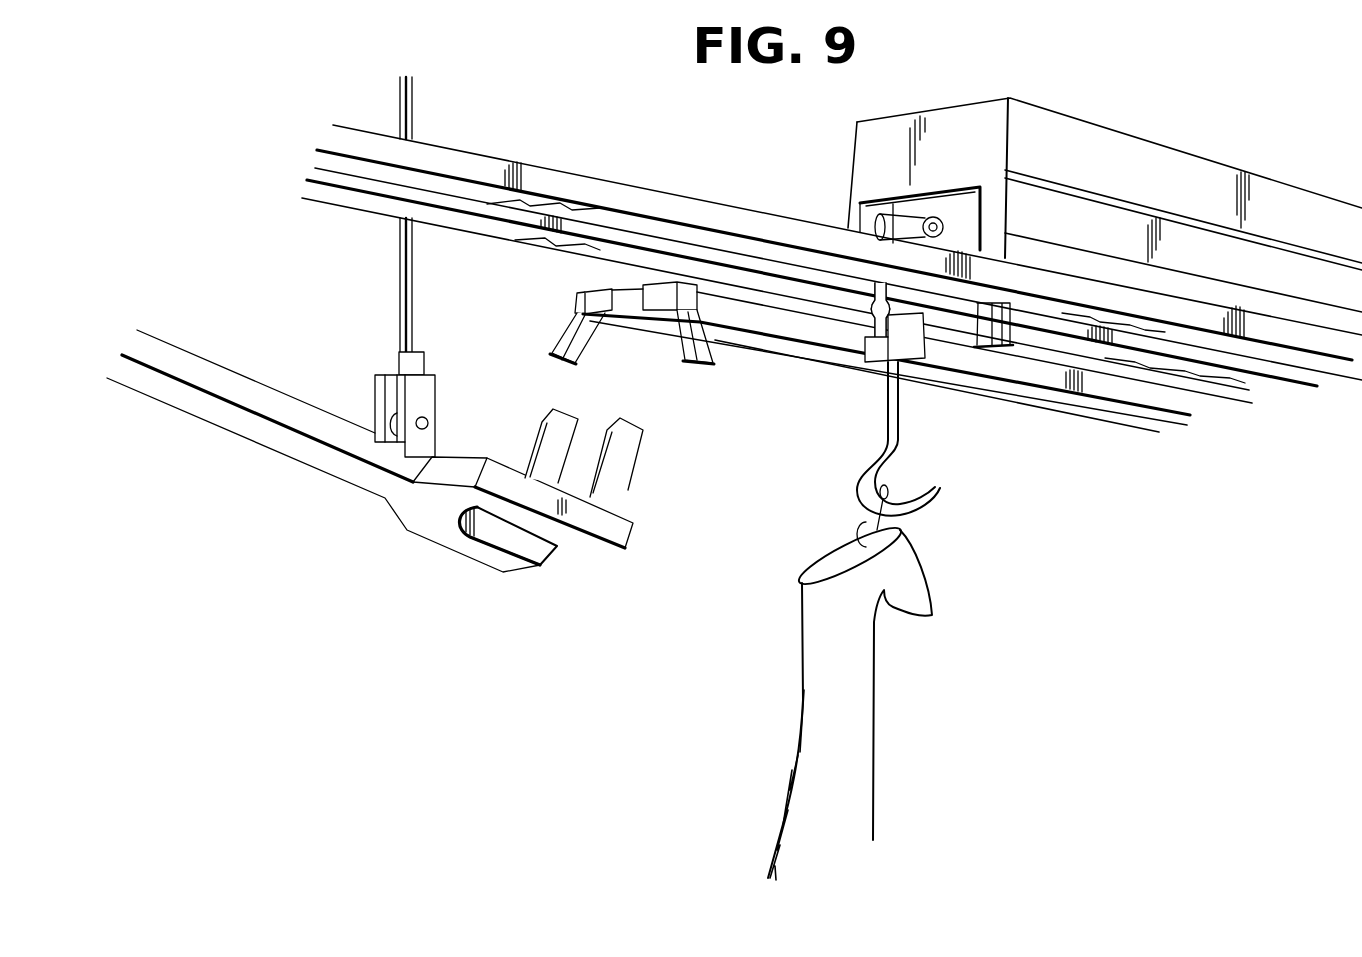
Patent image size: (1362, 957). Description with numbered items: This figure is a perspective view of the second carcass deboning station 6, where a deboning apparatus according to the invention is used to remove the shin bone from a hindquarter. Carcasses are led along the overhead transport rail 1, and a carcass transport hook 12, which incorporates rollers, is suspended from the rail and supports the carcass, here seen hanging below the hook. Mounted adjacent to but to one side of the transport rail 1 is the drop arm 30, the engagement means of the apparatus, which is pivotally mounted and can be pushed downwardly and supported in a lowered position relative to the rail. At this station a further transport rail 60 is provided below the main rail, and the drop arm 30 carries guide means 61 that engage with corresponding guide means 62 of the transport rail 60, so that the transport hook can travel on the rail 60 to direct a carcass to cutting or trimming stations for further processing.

The second carcass deboning station 6 is at (262, 172).
The transport rail 1 is at (450, 156).
The carcass transport hook 12 is at (886, 441).
The drop arm 30 is at (337, 470).
The further transport rail 60 is at (783, 320).
The guide means 61 is at (635, 456).
The guide means 62 is at (583, 342).